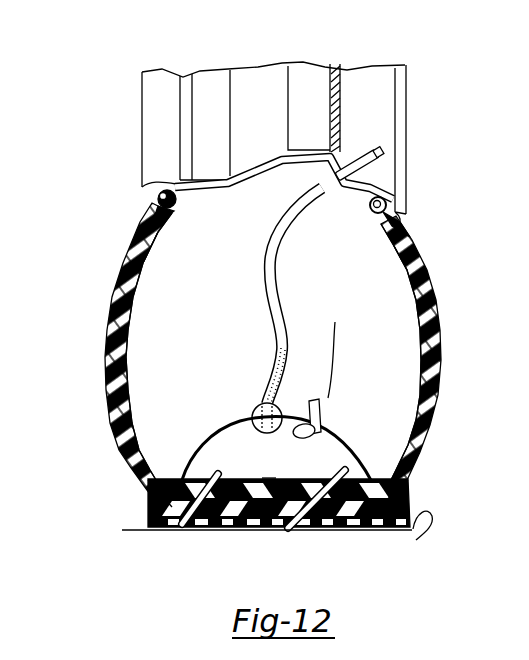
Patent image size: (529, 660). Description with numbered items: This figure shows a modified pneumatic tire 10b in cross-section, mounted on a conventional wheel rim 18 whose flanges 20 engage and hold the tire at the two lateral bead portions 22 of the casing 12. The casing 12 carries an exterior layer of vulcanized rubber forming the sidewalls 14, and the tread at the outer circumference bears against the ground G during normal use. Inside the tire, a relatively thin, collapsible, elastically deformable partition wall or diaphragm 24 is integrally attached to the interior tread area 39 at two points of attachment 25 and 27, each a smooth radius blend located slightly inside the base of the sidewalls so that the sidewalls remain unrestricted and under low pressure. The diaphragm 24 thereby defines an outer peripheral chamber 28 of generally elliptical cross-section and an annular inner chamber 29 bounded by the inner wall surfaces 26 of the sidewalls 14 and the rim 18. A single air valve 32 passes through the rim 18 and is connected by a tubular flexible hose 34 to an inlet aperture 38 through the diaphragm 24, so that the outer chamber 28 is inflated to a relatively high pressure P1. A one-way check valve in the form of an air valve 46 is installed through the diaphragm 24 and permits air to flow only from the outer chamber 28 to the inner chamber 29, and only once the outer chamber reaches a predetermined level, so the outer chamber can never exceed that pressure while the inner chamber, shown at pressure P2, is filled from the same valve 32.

The pneumatic tire 10b is at (277, 397).
The casing 12 is at (142, 260).
The sidewalls 14 is at (106, 276).
The wheel rim 18 is at (267, 176).
The flanges 20 is at (150, 191).
The bead portions 22 is at (172, 208).
The diaphragm 24 is at (324, 428).
The point of attachment 25 is at (182, 477).
The inner wall surfaces 26 is at (130, 358).
The point of attachment 27 is at (184, 524).
The outer chamber 28 is at (224, 438).
The inner chamber 29 is at (316, 372).
The air valve 32 is at (383, 162).
The flexible hose 34 is at (264, 297).
The inlet aperture 38 is at (258, 404).
The interior tread area 39 is at (266, 484).
The air valve 46 is at (329, 346).
The pressure P1 is at (300, 461).
The second chamber pressure P2 is at (301, 267).
The ground G is at (277, 536).